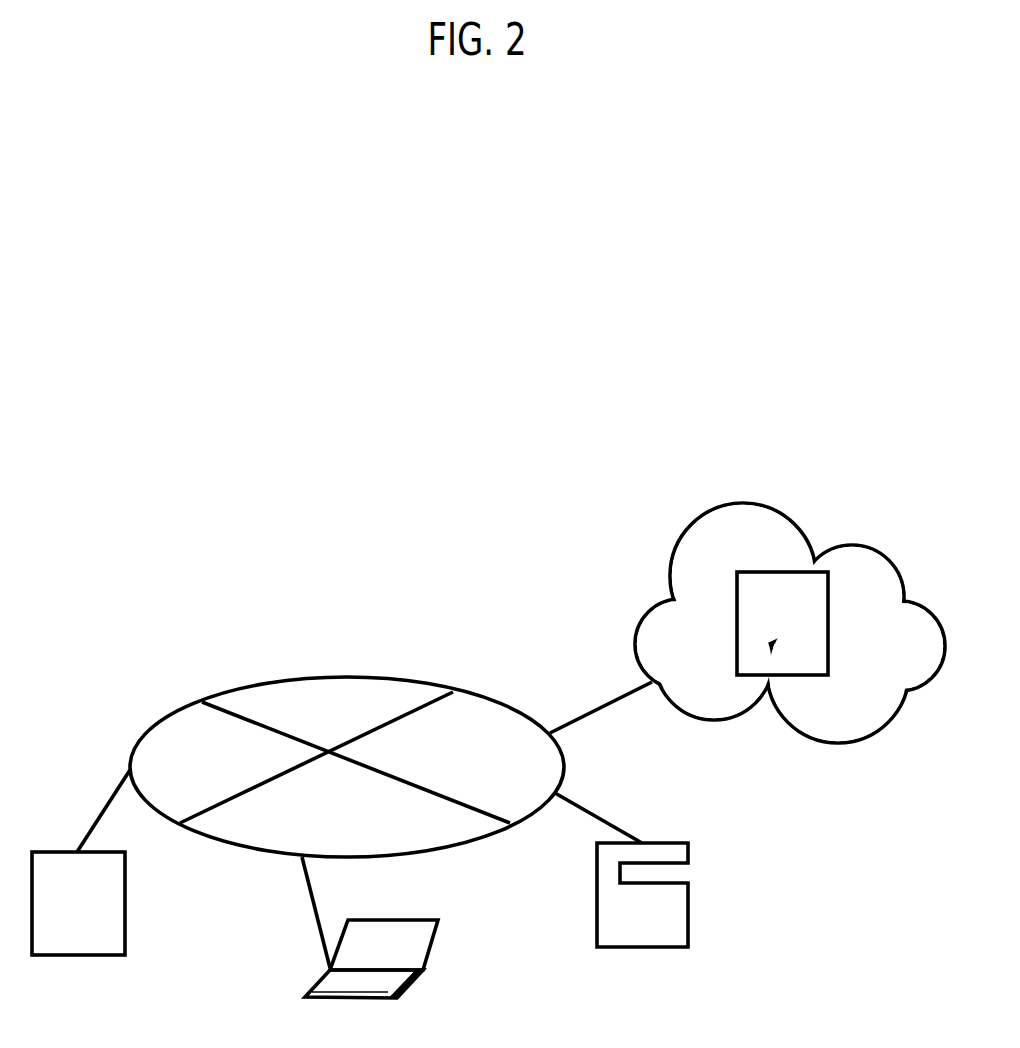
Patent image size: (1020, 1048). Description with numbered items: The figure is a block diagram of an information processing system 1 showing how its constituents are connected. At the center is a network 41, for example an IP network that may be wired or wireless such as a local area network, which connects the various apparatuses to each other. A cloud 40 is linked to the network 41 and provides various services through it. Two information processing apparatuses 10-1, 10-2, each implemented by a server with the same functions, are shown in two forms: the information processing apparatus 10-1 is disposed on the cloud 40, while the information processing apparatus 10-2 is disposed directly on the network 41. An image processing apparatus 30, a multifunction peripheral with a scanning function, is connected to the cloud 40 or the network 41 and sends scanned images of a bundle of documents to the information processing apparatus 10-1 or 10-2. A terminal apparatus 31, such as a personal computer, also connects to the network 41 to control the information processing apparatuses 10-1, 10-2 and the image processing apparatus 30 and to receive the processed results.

The information processing system 1 is at (276, 571).
The information processing apparatus 10-1 is at (750, 602).
The information processing apparatus 10-2 is at (125, 903).
The image processing apparatus 30 is at (688, 906).
The terminal apparatus 31 is at (423, 973).
The cloud 40 is at (635, 640).
The network 41 is at (365, 677).